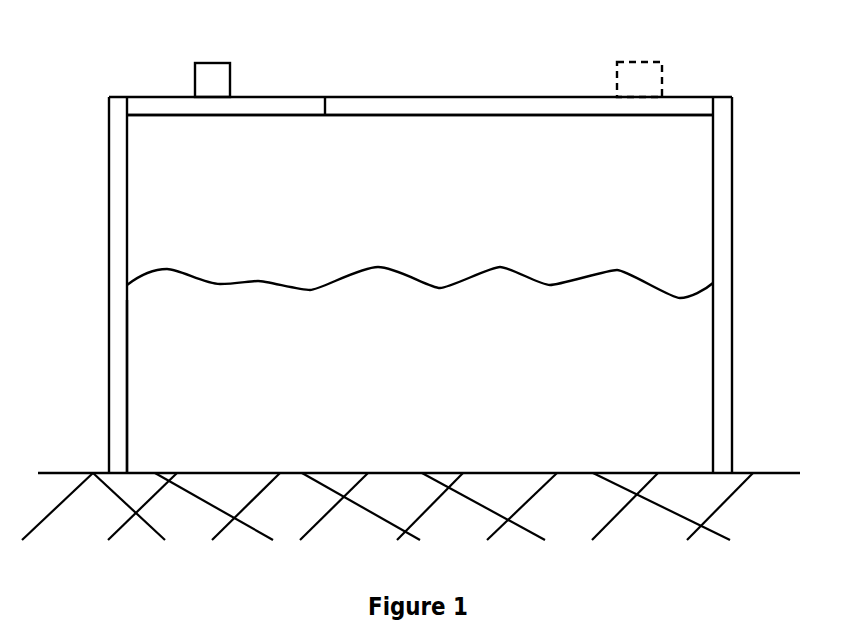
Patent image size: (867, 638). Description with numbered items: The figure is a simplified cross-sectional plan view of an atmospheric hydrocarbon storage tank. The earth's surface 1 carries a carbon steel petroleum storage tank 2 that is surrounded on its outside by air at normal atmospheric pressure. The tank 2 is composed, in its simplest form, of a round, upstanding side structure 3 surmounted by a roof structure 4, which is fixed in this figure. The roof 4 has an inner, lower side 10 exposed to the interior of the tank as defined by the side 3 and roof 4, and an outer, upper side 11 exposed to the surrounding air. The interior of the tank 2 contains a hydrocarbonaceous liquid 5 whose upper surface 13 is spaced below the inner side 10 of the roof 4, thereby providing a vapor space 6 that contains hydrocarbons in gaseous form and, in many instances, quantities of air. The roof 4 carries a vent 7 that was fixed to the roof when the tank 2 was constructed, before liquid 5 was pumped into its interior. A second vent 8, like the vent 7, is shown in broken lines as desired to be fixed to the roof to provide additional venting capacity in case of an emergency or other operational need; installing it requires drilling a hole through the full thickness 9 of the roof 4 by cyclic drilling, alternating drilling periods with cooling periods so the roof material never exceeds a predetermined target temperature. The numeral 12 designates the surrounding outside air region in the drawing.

The earth's surface 1 is at (745, 473).
The petroleum storage tank 2 is at (766, 221).
The side structure 3 is at (732, 192).
The roof structure 4 is at (267, 105).
The hydrocarbonaceous liquid 5 is at (150, 329).
The vapor space 6 is at (153, 200).
The vent 7 is at (212, 63).
The second vent 8 is at (662, 80).
The full thickness 9 is at (328, 108).
The inner lower side 10 is at (505, 115).
The outer upper side 11 is at (437, 97).
The outside environment 12 is at (368, 13).
The upper surface 13 is at (395, 268).